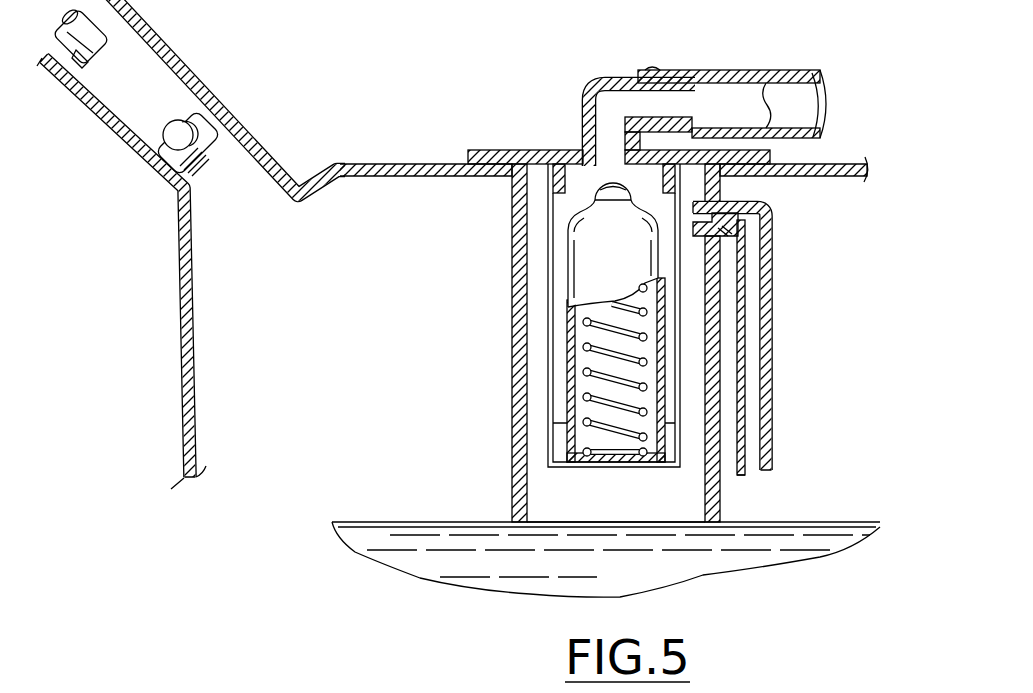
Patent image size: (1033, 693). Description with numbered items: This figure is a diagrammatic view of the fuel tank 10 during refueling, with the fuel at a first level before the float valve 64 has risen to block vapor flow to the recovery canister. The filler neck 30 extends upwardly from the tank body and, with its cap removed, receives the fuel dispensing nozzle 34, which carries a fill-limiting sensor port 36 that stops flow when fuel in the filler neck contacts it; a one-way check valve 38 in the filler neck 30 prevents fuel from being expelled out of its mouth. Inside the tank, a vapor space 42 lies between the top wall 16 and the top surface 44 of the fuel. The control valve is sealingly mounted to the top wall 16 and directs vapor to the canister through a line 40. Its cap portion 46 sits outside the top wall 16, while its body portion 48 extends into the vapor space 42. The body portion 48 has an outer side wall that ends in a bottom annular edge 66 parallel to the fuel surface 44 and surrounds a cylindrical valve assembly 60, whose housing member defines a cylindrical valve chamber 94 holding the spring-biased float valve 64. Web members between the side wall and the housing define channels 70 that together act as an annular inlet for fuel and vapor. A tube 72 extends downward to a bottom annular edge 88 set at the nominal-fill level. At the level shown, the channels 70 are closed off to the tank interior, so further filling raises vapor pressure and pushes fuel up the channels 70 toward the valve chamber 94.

The fuel tank 10 is at (176, 349).
The top wall 16 is at (453, 163).
The filler neck 30 is at (198, 84).
The fuel dispensing nozzle 34 is at (97, 42).
The fill-limiting sensor port 36 is at (72, 67).
The one-way check valve 38 is at (217, 153).
The line 40 is at (802, 92).
The vapor space 42 is at (473, 247).
The top surface of the fuel 44 is at (382, 522).
The cap portion 46 is at (535, 148).
The body portion 48 is at (509, 333).
The cylindrical valve assembly 60 is at (546, 389).
The float valve 64 is at (632, 267).
The bottom annular edge 66 is at (522, 524).
The channels 70 is at (547, 440).
The tube 72 is at (779, 316).
The bottom annular edge 88 is at (757, 473).
The cylindrical valve chamber 94 is at (585, 184).